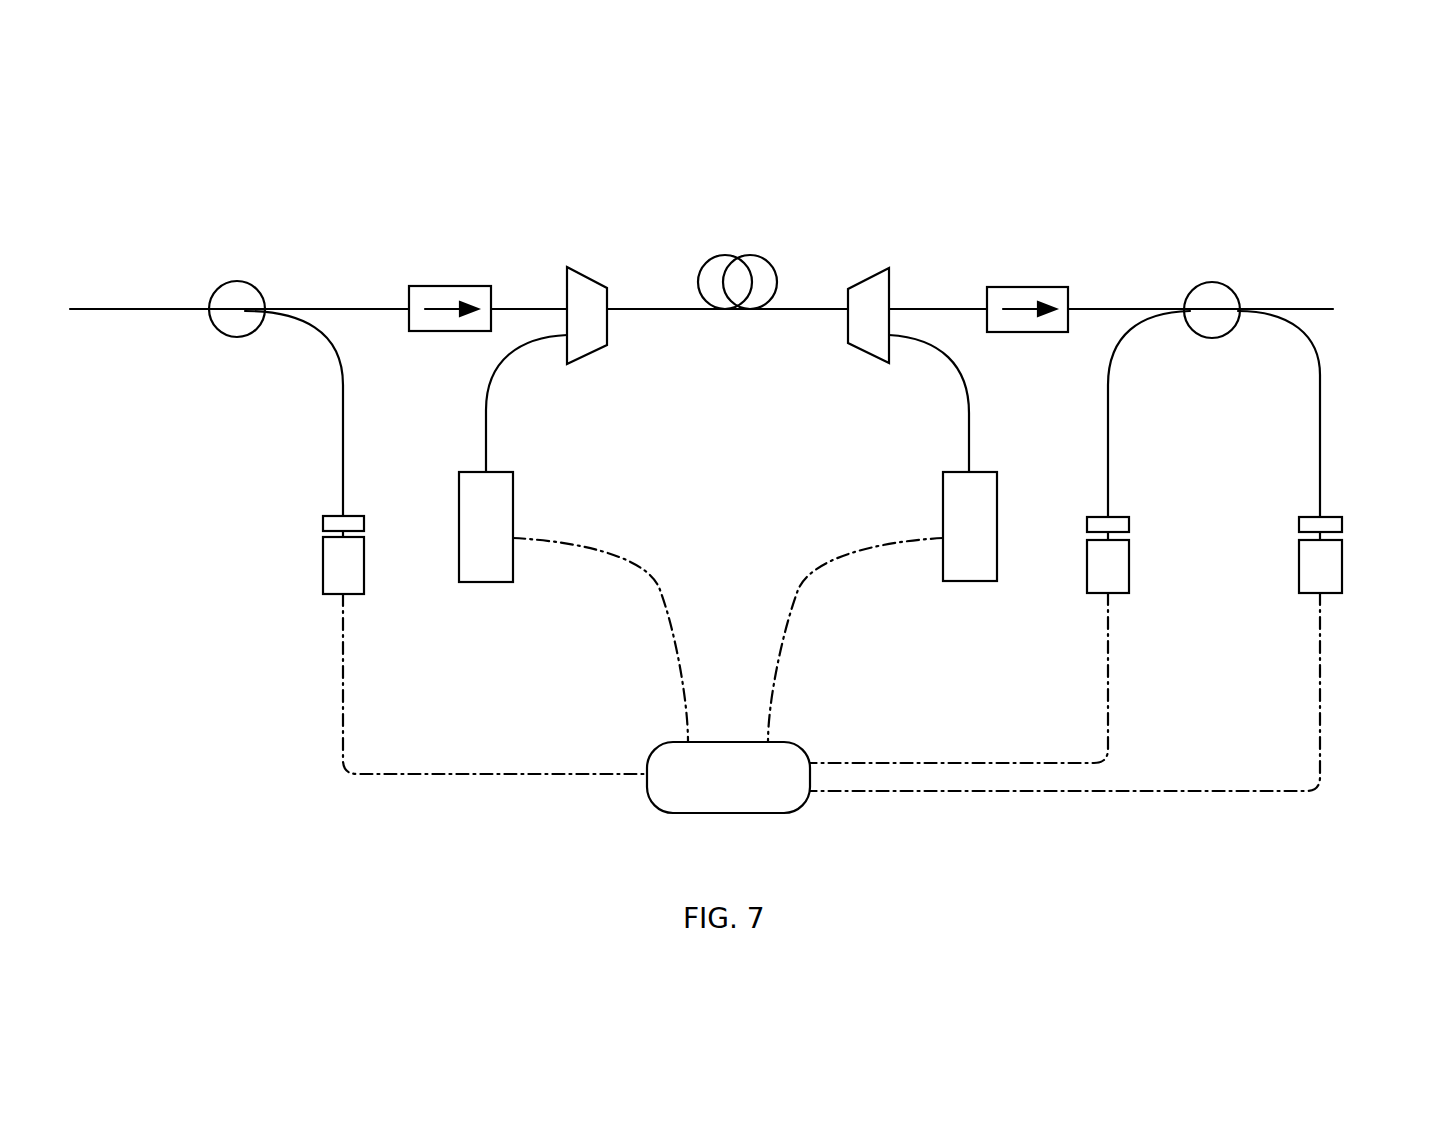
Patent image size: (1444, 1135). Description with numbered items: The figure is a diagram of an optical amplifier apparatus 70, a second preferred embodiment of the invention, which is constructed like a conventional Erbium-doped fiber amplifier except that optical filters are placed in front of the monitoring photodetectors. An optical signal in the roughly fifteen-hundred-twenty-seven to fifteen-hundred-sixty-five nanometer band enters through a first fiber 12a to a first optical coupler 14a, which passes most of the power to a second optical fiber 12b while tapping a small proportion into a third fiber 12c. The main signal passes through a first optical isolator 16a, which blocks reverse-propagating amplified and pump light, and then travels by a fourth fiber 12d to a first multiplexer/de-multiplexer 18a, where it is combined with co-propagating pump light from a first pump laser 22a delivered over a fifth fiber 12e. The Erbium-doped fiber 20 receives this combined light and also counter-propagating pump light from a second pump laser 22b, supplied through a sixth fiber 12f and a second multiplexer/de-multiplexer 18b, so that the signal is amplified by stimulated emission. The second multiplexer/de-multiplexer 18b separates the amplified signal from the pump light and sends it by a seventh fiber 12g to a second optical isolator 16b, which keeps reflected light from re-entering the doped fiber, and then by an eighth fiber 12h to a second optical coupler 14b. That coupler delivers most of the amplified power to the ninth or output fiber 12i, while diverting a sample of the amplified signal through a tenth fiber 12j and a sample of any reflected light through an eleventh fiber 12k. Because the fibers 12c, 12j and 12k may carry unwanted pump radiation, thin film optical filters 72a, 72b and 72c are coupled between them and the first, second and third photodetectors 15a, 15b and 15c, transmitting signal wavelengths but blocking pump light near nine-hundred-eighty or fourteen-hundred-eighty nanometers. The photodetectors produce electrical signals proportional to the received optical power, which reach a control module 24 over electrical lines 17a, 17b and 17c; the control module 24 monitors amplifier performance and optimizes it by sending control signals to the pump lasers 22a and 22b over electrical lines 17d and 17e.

The optical amplifier apparatus 70 is at (397, 103).
The first fiber 12a is at (148, 303).
The second optical fiber 12b is at (382, 303).
The third fiber 12c is at (340, 442).
The fourth fiber 12d is at (513, 303).
The fifth fiber 12e is at (486, 415).
The sixth fiber 12f is at (970, 420).
The seventh fiber 12g is at (953, 305).
The eighth fiber 12h is at (1101, 305).
The ninth or output fiber 12i is at (1301, 306).
The tenth fiber 12j is at (1322, 408).
The eleventh fiber 12k is at (1110, 438).
The first optical coupler 14a is at (232, 280).
The second optical coupler 14b is at (1213, 282).
The first photodetector 15a is at (323, 565).
The second photodetector 15b is at (1342, 575).
The third photodetector 15c is at (1129, 575).
The first optical isolator 16a is at (444, 286).
The second optical isolator 16b is at (1018, 287).
The electrical line 17a is at (343, 698).
The electrical line 17b is at (1321, 708).
The electrical line 17c is at (1108, 712).
The electrical line 17d is at (655, 574).
The electrical line 17e is at (802, 574).
The first multiplexer/de-multiplexer 18a is at (582, 271).
The second multiplexer/de-multiplexer 18b is at (867, 276).
The Erbium-doped fiber 20 is at (727, 257).
The first pump laser 22a is at (515, 482).
The second pump laser 22b is at (942, 482).
The control module 24 is at (652, 752).
The optical filter 72a is at (323, 528).
The optical filter 72b is at (1342, 530).
The optical filter 72c is at (1129, 530).